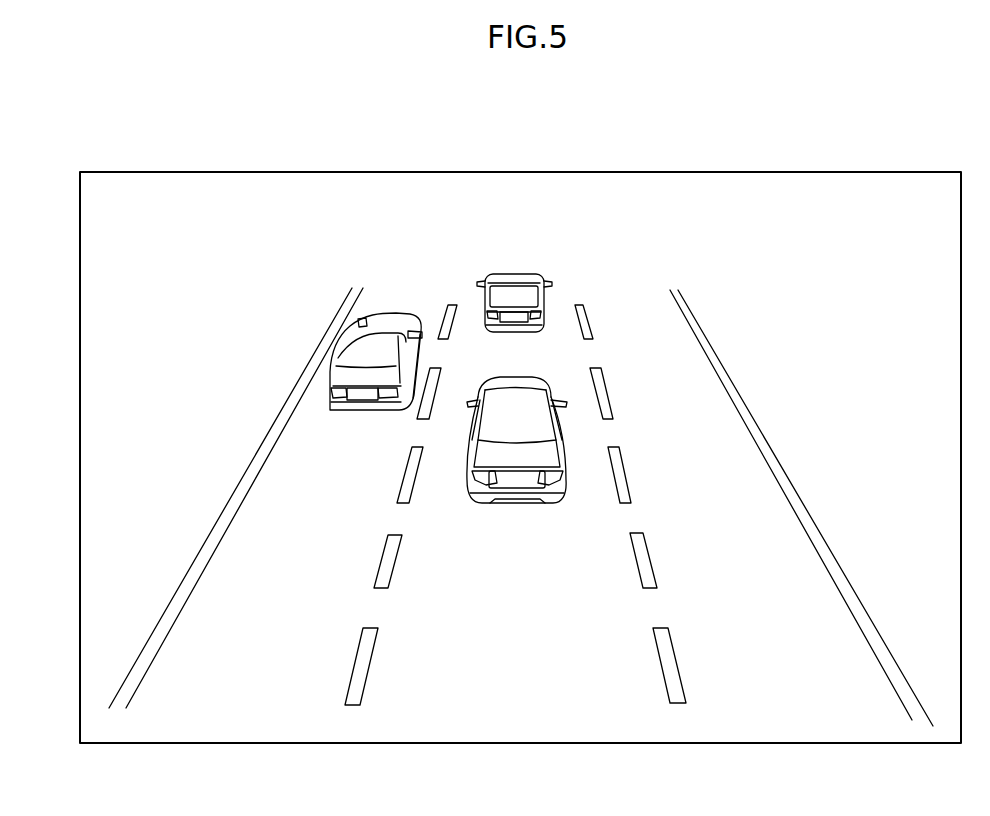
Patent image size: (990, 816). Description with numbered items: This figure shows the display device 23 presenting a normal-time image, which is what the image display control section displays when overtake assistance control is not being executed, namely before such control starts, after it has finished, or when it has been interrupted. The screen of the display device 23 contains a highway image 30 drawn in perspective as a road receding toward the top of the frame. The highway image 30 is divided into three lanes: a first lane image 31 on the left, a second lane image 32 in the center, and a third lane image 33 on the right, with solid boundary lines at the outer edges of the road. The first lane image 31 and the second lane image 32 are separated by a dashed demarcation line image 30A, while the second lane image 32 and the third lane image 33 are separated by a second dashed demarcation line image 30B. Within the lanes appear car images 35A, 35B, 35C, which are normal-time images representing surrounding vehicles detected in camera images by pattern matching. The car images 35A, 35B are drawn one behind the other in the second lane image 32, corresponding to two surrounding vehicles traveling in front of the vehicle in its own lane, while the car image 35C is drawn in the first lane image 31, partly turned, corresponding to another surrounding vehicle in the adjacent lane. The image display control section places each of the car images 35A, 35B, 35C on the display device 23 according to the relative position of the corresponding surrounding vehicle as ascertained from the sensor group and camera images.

The display device 23 is at (770, 172).
The highway image 30 is at (733, 301).
The first lane image 31 is at (252, 517).
The second lane image 32 is at (488, 555).
The third lane image 33 is at (852, 665).
The demarcation line image 30A is at (385, 556).
The demarcation line image 30B is at (668, 674).
The car image 35A is at (512, 500).
The car image 35B is at (530, 268).
The car image 35C is at (348, 411).